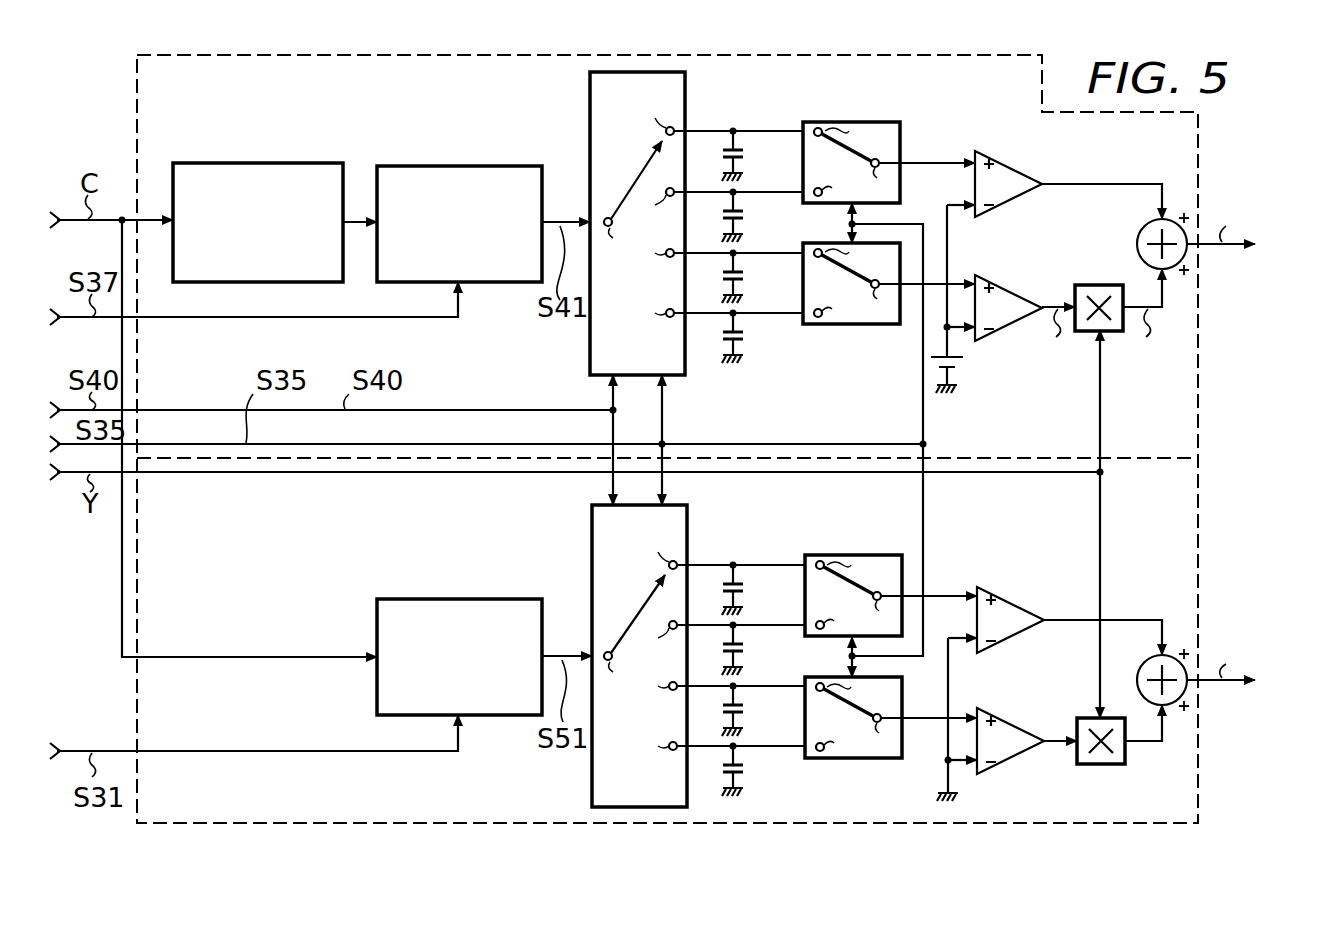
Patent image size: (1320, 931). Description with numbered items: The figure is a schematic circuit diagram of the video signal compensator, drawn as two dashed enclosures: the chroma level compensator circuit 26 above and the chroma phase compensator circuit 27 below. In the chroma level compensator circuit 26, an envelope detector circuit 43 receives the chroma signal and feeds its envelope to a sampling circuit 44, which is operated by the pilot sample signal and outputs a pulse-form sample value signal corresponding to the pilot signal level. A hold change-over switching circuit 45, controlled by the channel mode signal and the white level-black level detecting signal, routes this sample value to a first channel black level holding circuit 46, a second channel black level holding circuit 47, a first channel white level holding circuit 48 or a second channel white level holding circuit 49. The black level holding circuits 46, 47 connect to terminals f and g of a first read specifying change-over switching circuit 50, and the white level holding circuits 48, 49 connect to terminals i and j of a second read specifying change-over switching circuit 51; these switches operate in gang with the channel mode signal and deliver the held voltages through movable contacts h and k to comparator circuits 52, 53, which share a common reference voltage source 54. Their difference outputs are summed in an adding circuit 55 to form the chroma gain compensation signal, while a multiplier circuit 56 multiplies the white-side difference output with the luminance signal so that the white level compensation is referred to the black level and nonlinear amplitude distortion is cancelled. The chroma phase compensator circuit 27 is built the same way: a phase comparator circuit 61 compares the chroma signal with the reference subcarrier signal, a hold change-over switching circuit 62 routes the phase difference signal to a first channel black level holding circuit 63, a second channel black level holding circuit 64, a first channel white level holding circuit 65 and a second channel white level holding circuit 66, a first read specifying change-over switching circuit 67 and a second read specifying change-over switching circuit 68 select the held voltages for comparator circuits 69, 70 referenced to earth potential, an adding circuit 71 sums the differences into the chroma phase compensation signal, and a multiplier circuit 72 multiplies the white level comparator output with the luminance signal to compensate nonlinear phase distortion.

The chroma level compensator circuit 26 is at (137, 111).
The chroma phase compensator circuit 27 is at (137, 680).
The envelope detector circuit 43 is at (292, 163).
The sampling circuit 44 is at (500, 166).
The hold change-over switching circuit 45 is at (685, 100).
The first channel black level holding circuit 46 is at (743, 162).
The second channel black level holding circuit 47 is at (743, 222).
The first channel white level holding circuit 48 is at (743, 283).
The second channel white level holding circuit 49 is at (743, 344).
The first read specifying change-over switching circuit 50 is at (850, 122).
The second read specifying change-over switching circuit 51 is at (853, 325).
The comparator circuit 52 is at (1018, 173).
The comparator circuit 53 is at (1003, 283).
The reference voltage source 54 is at (958, 366).
The adding circuit 55 is at (1138, 234).
The multiplier circuit 56 is at (1085, 285).
The phase comparator circuit 61 is at (503, 599).
The hold change-over switching circuit 62 is at (687, 530).
The first channel black level holding circuit 63 is at (743, 596).
The second channel black level holding circuit 64 is at (743, 656).
The first channel white level holding circuit 65 is at (743, 717).
The second channel white level holding circuit 66 is at (743, 777).
The first read specifying change-over switching circuit 67 is at (852, 555).
The second read specifying change-over switching circuit 68 is at (856, 761).
The comparator circuit 69 is at (1018, 605).
The comparator circuit 70 is at (1012, 716).
The adding circuit 71 is at (1137, 678).
The multiplier circuit 72 is at (1086, 704).